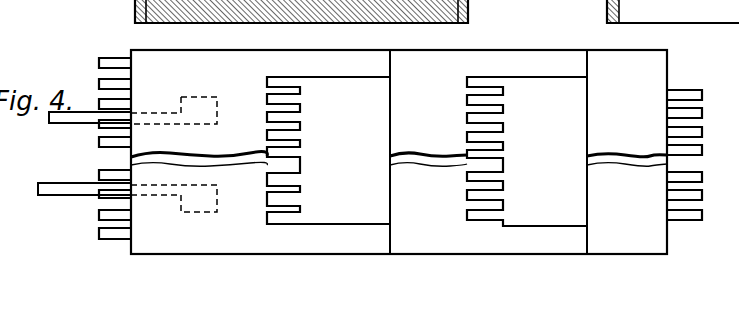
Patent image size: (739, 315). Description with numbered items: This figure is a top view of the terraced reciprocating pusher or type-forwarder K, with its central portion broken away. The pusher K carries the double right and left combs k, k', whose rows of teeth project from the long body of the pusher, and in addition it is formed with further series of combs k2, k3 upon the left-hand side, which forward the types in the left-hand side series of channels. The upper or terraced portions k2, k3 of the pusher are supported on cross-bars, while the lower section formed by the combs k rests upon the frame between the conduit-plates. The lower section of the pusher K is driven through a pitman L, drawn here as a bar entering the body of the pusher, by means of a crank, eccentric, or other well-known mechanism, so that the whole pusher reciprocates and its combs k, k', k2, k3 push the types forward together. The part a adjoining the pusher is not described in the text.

The reciprocating pusher K is at (399, 152).
The pitman L is at (84, 164).
The comb k is at (105, 148).
The comb k' is at (328, 150).
The comb k2 is at (541, 148).
The comb k3 is at (693, 155).
The wall block a is at (437, 11).